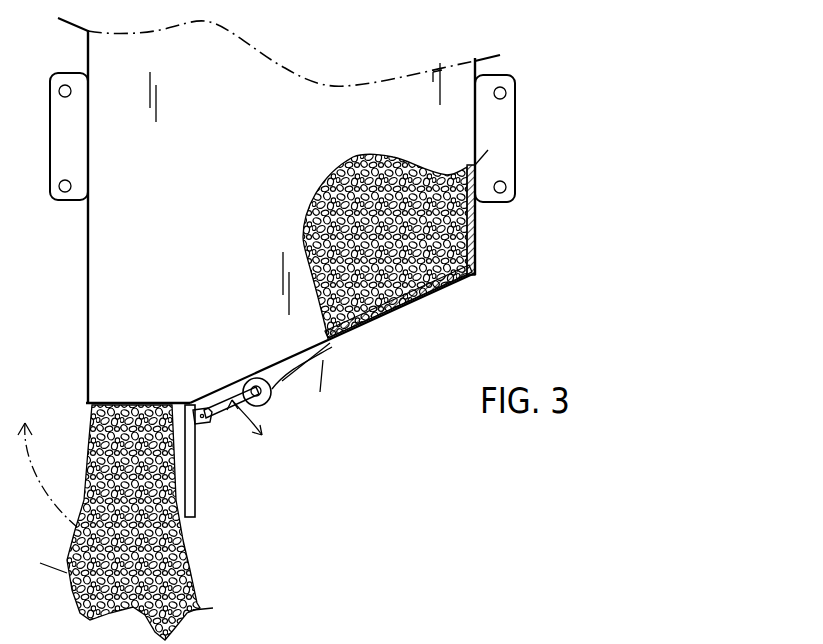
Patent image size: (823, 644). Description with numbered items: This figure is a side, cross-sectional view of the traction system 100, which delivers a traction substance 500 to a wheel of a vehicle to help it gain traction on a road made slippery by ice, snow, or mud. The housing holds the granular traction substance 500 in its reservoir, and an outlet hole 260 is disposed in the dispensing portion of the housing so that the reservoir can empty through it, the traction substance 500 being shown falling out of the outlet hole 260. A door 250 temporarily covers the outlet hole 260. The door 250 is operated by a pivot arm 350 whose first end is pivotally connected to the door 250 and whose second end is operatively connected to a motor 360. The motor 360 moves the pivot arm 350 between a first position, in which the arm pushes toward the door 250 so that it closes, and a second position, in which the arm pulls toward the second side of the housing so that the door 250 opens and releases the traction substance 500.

The traction system 100 is at (606, 120).
The door 250 is at (197, 493).
The outlet hole 260 is at (95, 408).
The pivot arm 350 is at (222, 417).
The motor 360 is at (268, 402).
The traction substance 500 is at (476, 242).